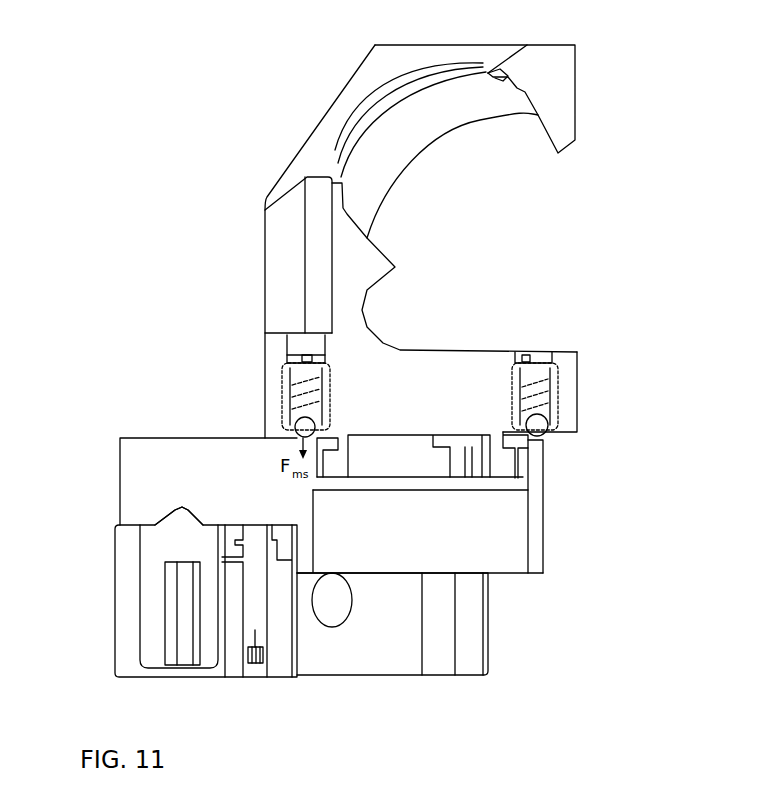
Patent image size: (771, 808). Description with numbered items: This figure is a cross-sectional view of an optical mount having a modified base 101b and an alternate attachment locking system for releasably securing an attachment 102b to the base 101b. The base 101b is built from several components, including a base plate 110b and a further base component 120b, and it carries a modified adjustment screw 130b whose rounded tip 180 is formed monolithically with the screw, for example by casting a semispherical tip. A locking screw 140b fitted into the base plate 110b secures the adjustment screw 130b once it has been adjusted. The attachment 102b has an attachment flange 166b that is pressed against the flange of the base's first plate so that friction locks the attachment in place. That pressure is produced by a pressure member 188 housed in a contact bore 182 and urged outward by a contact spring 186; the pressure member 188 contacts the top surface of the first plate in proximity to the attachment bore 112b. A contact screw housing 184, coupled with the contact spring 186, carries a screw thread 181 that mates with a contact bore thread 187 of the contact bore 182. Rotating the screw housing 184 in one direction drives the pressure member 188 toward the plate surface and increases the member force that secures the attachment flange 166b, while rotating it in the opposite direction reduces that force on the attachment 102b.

The modified base 101b is at (326, 555).
The attachment 102b is at (582, 89).
The housing 110b is at (120, 477).
The attachment bore 112b is at (506, 567).
The housing side portion 120b is at (157, 588).
The modified adjustment screw 130b is at (148, 655).
The terminal pin 140b is at (255, 677).
The attachment flange 166b is at (507, 462).
The integral rounded tip 180 is at (187, 508).
The screw thread 181 is at (558, 376).
The contact bore 182 is at (437, 348).
The contact screw housing 184 is at (523, 360).
The contact spring 186 is at (327, 383).
The contact bore thread 187 is at (552, 377).
The pressure member 188 is at (328, 428).